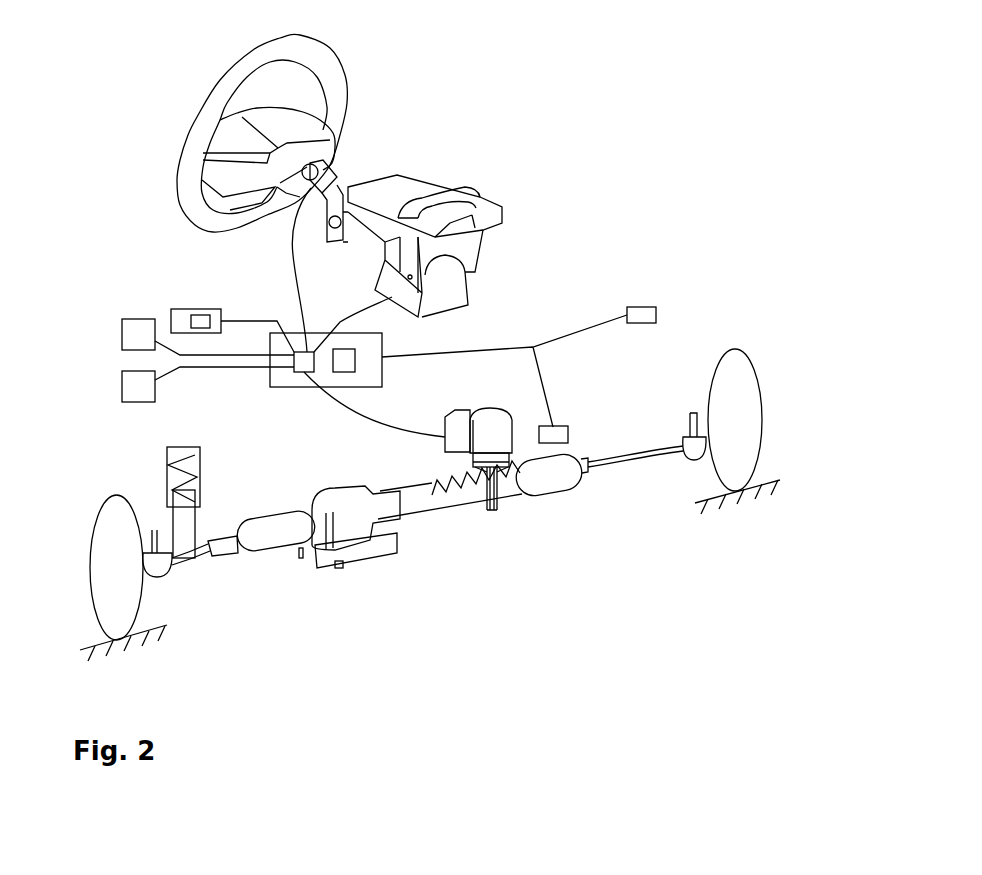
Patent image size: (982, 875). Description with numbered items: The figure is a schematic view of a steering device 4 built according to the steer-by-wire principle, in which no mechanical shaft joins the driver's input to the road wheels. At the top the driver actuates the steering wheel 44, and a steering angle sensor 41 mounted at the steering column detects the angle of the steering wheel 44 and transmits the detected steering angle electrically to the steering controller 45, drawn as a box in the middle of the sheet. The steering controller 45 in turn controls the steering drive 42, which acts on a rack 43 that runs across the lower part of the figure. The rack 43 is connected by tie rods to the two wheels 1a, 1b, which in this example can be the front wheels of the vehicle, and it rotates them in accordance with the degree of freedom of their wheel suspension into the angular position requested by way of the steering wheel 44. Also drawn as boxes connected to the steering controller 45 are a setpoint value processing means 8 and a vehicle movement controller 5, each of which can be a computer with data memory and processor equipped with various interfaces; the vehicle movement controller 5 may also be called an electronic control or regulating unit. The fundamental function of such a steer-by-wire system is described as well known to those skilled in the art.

The steering wheel 44 is at (330, 63).
The steering angle sensor 41 is at (335, 166).
The steering device 4 is at (558, 215).
The vehicle movement controller 5 is at (128, 328).
The setpoint value processing means 8 is at (133, 383).
The steering controller 45 is at (283, 399).
The wheel 1a is at (742, 383).
The wheel 1b is at (117, 520).
The rack 43 is at (453, 500).
The steering drive 42 is at (493, 433).